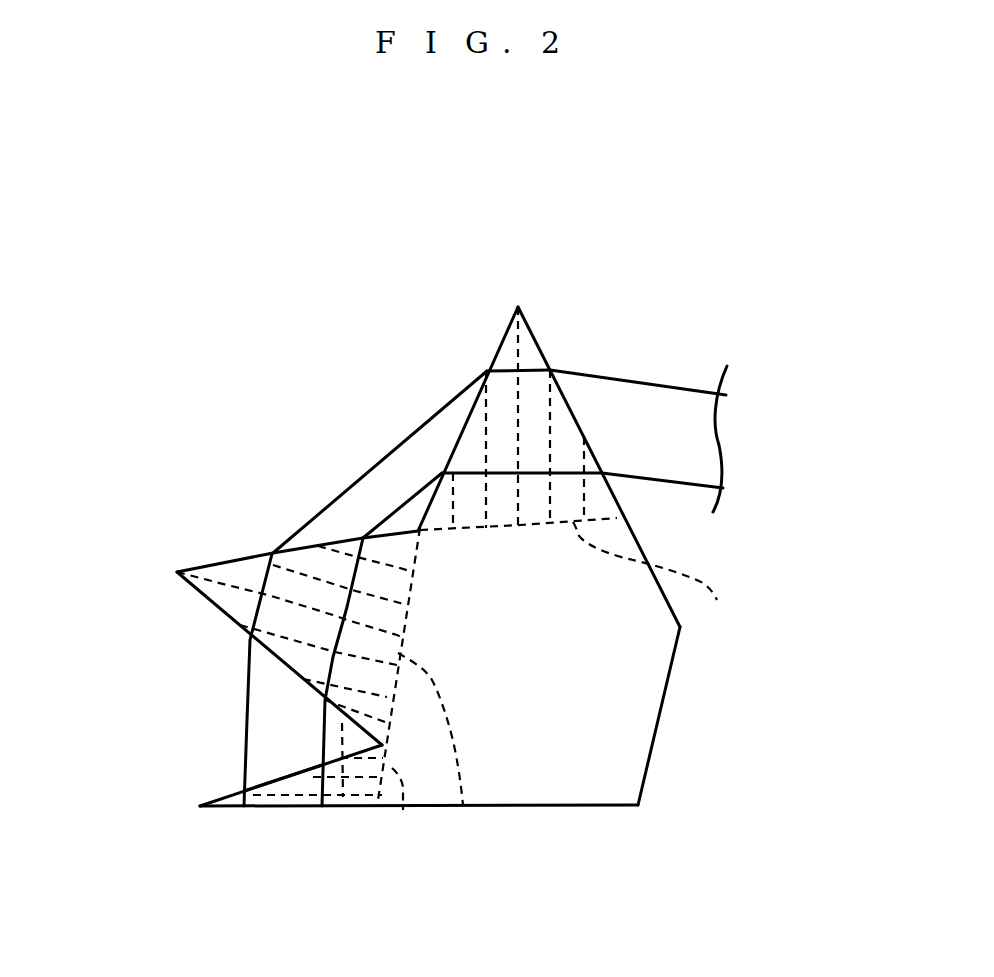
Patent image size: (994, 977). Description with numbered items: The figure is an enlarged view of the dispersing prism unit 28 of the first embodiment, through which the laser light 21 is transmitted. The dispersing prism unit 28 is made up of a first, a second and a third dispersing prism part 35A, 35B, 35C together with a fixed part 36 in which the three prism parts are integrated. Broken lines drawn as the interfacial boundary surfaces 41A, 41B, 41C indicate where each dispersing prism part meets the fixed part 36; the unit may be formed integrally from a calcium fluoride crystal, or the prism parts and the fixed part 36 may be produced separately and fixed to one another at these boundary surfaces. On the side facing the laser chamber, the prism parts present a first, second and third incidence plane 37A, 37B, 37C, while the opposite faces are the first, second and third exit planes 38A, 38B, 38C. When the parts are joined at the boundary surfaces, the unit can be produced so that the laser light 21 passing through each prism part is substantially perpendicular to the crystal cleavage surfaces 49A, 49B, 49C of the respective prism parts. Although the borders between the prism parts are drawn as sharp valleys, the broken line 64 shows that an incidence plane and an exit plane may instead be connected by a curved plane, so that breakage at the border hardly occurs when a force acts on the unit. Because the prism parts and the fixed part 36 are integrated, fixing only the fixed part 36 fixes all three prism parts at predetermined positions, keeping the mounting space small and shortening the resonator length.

The dispersing prism unit 28 is at (671, 275).
The laser light 21 is at (676, 388).
The first dispersing prism part 35A is at (518, 305).
The second dispersing prism part 35B is at (192, 567).
The third dispersing prism part 35C is at (217, 806).
The fixed part 36 is at (652, 716).
The first incidence plane 37A is at (578, 413).
The second incidence plane 37B is at (323, 547).
The third incidence plane 37C is at (240, 797).
The first exit plane 38A is at (465, 423).
The second exit plane 38B is at (258, 667).
The third exit plane 38C is at (283, 808).
The interfacial boundary surface 41A is at (667, 581).
The interfacial boundary surface 41B is at (463, 805).
The interfacial boundary surface 41C is at (406, 832).
The crystal cleavage surface 49A is at (624, 437).
The crystal cleavage surface 49B is at (289, 515).
The crystal cleavage surface 49C is at (346, 843).
The broken line 64 is at (130, 690).